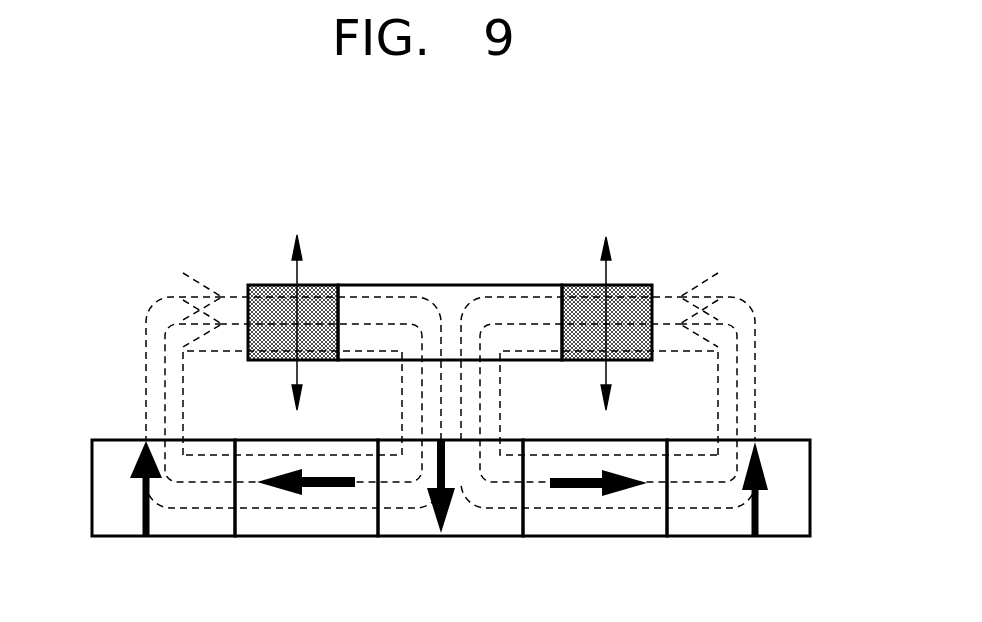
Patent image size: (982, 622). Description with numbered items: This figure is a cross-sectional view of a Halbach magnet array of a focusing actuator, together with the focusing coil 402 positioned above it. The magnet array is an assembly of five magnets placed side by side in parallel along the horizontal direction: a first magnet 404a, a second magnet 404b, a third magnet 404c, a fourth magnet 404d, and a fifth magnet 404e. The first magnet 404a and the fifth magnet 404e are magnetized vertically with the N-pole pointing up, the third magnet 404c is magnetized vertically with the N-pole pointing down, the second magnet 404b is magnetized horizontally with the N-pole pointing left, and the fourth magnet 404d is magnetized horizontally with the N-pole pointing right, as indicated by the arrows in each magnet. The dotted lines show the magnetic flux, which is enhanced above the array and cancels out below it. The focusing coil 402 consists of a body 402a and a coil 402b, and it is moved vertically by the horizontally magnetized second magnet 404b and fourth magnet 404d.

The focusing coil 402 is at (435, 276).
The body 402a is at (458, 293).
The coil 402b is at (258, 290).
The first magnet 404a is at (172, 525).
The second magnet 404b is at (303, 525).
The third magnet 404c is at (465, 525).
The fourth magnet 404d is at (597, 527).
The fifth magnet 404e is at (733, 527).